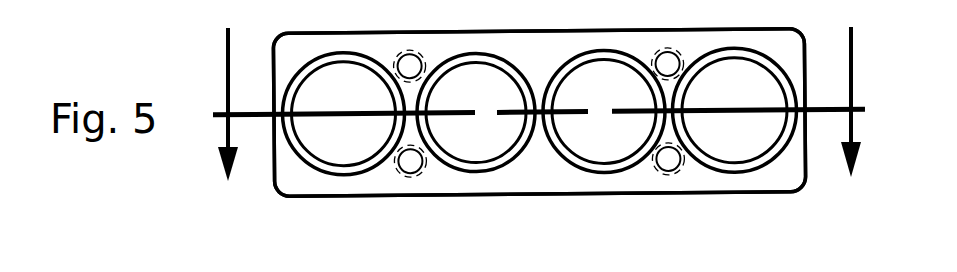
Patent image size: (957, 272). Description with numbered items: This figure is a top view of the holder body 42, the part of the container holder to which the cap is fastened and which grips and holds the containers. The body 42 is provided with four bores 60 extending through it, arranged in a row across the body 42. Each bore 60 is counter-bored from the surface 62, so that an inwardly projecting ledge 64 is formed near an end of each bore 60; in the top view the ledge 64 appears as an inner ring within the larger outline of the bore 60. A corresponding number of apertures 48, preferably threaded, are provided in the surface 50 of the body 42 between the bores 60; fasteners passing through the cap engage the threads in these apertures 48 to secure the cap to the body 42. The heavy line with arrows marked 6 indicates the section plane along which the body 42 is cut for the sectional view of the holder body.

The body 42 is at (783, 184).
The apertures 48 is at (668, 172).
The surface 50 is at (375, 179).
The bores 60 is at (312, 149).
The surface 62 is at (517, 178).
The ledges 64 is at (357, 173).
The section line 6- 6 is at (539, 123).